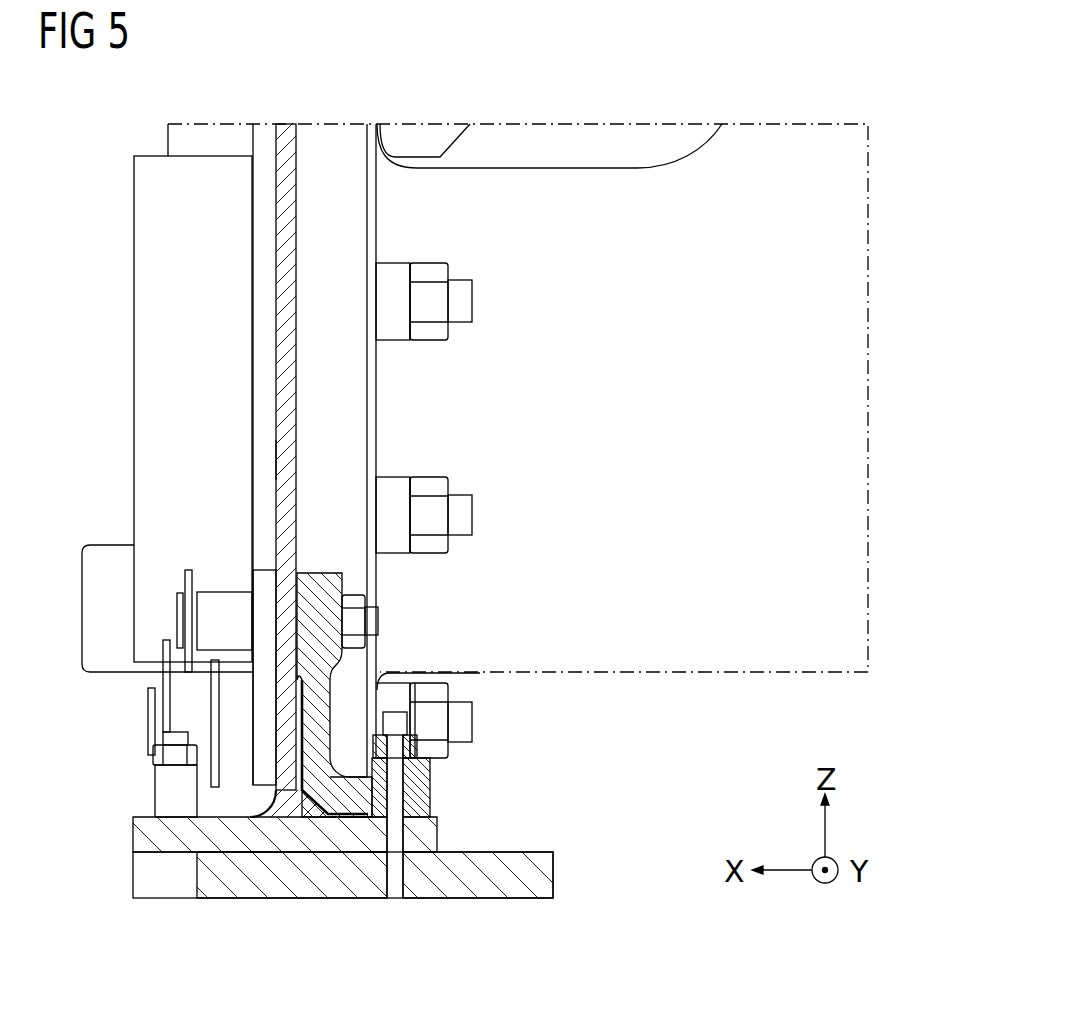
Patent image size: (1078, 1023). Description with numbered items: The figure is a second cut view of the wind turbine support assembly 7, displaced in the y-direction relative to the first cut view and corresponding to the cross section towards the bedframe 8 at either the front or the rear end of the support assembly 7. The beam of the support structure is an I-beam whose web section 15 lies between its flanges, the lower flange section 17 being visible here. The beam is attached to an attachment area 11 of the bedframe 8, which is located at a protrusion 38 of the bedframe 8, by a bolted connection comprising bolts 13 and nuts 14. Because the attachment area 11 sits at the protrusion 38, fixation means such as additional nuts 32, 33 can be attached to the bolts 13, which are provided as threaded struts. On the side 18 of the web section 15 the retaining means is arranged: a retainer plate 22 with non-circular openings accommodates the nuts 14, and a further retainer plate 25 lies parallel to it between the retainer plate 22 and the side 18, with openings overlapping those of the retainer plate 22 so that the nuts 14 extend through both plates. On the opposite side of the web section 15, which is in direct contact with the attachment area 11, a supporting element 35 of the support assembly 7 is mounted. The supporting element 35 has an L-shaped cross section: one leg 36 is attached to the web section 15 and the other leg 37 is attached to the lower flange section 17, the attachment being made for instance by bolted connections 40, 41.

The support assembly 7 is at (895, 157).
The bedframe 8 is at (365, 401).
The attachment area 11 is at (331, 163).
The bolt 13 is at (460, 723).
The nut 14 is at (180, 722).
The web section 15 is at (287, 535).
The lower flange section 17 is at (278, 830).
The side 18 is at (276, 460).
The retainer plate 22 is at (167, 682).
The further retainer plate 25 is at (217, 750).
The additional nut 32 is at (432, 692).
The additional nut 33 is at (392, 702).
The supporting element 35 is at (345, 795).
The leg 36 is at (317, 728).
The leg 37 is at (372, 800).
The protrusion 38 is at (636, 192).
The bolted connection 40 is at (353, 622).
The bolted connection 41 is at (393, 702).